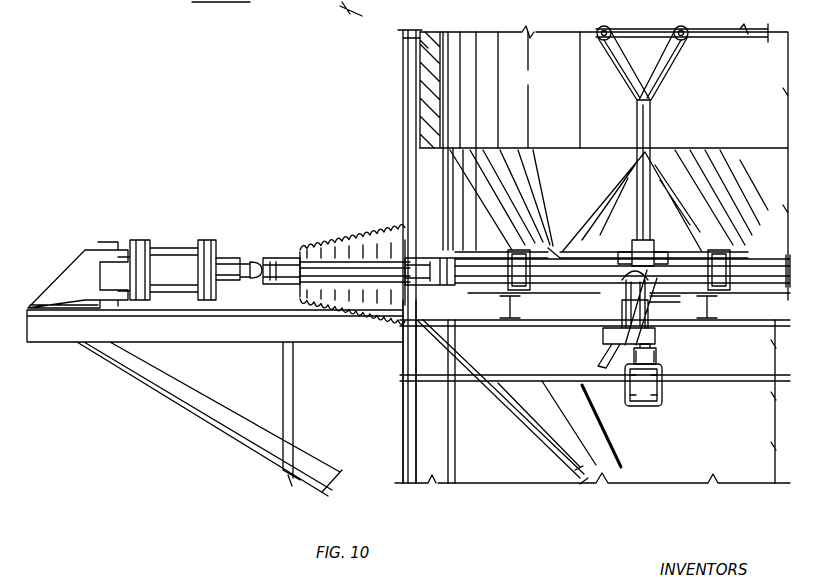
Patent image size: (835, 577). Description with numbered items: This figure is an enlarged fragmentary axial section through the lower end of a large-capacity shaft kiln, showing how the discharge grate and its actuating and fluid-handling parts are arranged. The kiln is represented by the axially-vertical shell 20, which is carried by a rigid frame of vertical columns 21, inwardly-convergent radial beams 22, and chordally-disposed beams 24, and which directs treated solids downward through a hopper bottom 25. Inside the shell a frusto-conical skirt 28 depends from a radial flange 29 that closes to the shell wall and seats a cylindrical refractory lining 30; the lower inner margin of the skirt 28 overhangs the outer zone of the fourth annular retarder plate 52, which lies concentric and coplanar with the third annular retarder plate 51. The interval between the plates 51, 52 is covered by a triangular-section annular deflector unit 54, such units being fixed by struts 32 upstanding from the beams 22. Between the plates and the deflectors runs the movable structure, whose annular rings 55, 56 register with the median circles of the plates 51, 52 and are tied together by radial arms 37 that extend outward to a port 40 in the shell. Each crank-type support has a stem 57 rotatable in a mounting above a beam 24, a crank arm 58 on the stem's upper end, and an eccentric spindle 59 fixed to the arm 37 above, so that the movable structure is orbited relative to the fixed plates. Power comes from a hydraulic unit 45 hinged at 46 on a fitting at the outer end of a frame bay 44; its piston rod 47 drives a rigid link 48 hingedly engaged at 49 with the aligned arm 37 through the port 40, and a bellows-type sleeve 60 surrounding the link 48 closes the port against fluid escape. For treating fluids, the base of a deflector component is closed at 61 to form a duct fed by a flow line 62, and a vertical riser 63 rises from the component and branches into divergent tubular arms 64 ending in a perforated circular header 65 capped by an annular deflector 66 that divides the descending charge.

The shell 20 is at (418, 57).
The vertical columns 21 is at (403, 438).
The radial beams 22 is at (595, 363).
The chordally-disposed beams 24 is at (663, 390).
The hopper bottom 25 is at (550, 456).
The frusto-conical skirt 28 is at (599, 204).
The radial flange 29 is at (443, 150).
The refractory lining 30 is at (432, 82).
The struts 32 is at (674, 296).
The radial arms 37 is at (786, 262).
The port 40 is at (424, 290).
The frame bays 44 is at (230, 334).
The hydraulic unit 45 is at (170, 248).
The hinge mounting 46 is at (108, 244).
The piston rod 47 is at (232, 258).
The rigid link 48 is at (322, 272).
The hinged engagement 49 is at (283, 258).
The third annular retarder plate 51 is at (734, 296).
The fourth annular retarder plate 52 is at (524, 296).
The annular deflector unit 54 is at (720, 160).
The annular ring 55 is at (730, 256).
The annular ring 56 is at (530, 252).
The stem portion 57 is at (658, 354).
The crank arm 58 is at (657, 336).
The spindle 59 is at (648, 296).
The bellows-type sleeve 60 is at (360, 232).
The closed base area 61 is at (668, 256).
The flow line 62 is at (612, 354).
The vertical riser 63 is at (652, 138).
The tubular arms 64 is at (658, 78).
The circular header 65 is at (598, 40).
The annular deflector 66 is at (690, 26).